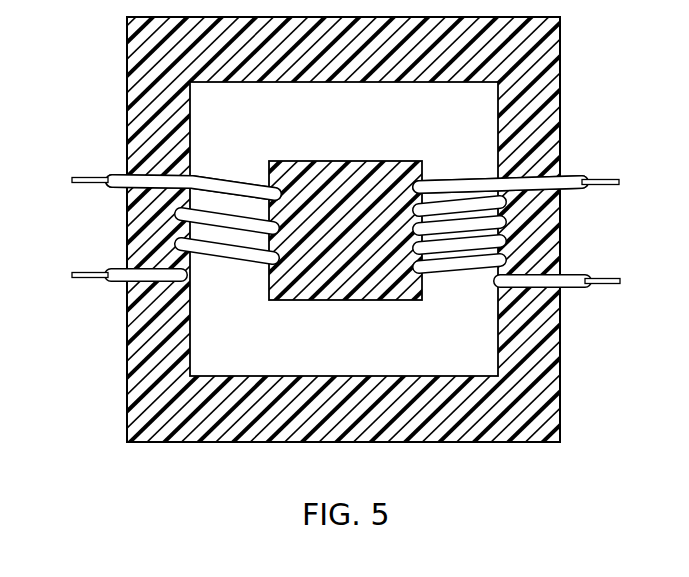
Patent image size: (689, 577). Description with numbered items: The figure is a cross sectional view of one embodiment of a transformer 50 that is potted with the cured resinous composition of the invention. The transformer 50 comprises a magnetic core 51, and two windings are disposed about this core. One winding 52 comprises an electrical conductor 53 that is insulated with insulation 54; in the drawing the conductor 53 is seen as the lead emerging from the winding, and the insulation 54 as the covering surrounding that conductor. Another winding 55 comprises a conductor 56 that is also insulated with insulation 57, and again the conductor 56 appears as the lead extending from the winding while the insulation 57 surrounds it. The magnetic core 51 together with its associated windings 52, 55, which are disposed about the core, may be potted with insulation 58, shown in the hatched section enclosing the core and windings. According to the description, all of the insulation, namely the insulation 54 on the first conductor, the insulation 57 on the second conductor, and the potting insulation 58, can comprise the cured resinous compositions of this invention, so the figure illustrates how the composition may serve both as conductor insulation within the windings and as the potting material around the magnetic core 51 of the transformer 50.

The transformer 50 is at (343, 246).
The magnetic core 51 is at (485, 340).
The winding 52 is at (221, 181).
The electrical conductor 53 is at (90, 176).
The insulation 54 is at (118, 186).
The winding 55 is at (474, 177).
The conductor 56 is at (604, 177).
The insulation 57 is at (578, 190).
The insulation 58 is at (126, 403).